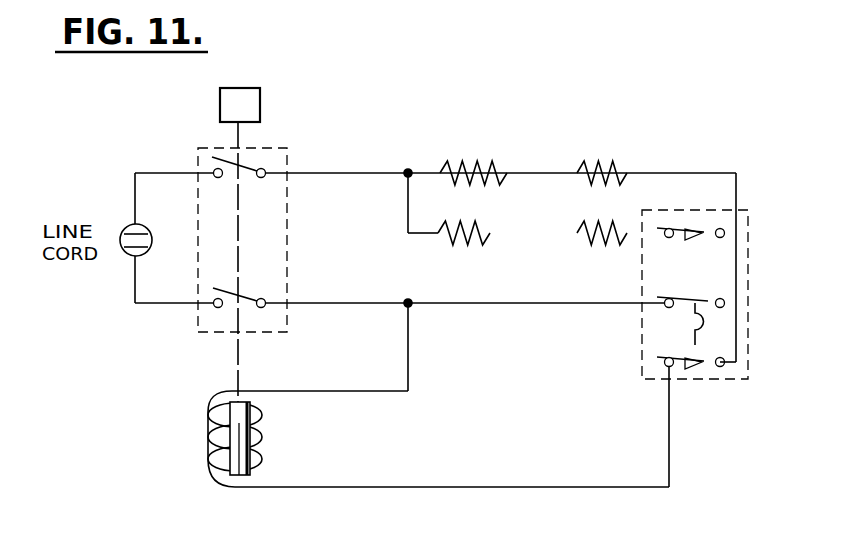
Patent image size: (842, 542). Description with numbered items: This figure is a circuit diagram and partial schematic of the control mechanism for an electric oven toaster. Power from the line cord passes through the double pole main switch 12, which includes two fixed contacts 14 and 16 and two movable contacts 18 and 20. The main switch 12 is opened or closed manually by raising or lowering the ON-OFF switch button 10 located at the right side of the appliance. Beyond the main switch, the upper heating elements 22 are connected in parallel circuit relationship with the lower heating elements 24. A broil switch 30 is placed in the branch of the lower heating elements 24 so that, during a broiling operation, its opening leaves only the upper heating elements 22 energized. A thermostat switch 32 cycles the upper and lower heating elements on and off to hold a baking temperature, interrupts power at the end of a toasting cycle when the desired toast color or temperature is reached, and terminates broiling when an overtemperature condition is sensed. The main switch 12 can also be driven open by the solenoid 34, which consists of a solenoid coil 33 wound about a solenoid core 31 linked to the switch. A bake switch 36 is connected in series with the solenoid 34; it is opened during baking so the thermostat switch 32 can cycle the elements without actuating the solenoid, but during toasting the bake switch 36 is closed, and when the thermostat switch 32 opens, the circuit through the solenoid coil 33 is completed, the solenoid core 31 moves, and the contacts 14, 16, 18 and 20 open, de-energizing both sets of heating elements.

The ON-OFF switch button 10 is at (260, 93).
The double pole main switch 12 is at (243, 227).
The fixed contact 14 is at (213, 170).
The fixed contact 16 is at (215, 307).
The movable contact 18 is at (248, 168).
The movable contact 20 is at (228, 289).
The upper heating elements 22 is at (478, 162).
The lower heating elements 24 is at (578, 228).
The broil switch 30 is at (683, 228).
The solenoid core 31 is at (250, 408).
The thermostat switch 32 is at (680, 296).
The solenoid coil 33 is at (207, 427).
The solenoid 34 is at (218, 488).
The bake switch 36 is at (685, 360).